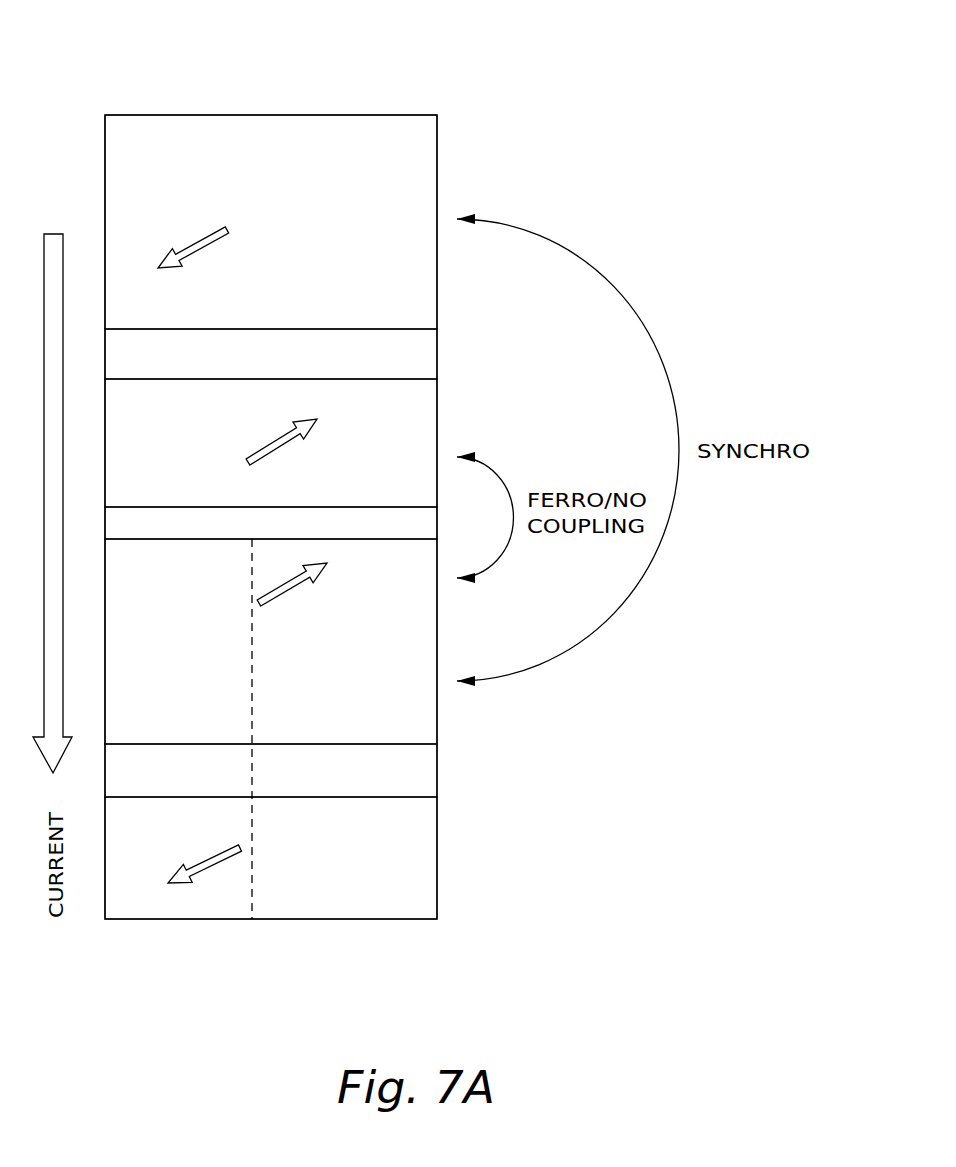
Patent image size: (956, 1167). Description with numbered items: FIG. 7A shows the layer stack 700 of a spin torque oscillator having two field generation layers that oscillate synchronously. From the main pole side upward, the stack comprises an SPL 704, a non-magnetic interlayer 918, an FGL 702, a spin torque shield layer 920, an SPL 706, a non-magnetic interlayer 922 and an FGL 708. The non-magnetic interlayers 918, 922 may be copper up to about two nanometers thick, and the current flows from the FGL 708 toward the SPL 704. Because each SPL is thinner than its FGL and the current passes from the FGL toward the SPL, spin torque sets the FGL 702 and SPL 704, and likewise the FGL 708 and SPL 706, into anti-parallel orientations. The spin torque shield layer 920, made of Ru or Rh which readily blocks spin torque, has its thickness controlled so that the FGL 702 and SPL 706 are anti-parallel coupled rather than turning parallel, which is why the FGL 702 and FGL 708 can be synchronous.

The magnetic memory stack 700 is at (208, 40).
The FGL 708 is at (428, 162).
The non-magnetic interlayer 922 is at (428, 356).
The SPL 706 is at (428, 402).
The spin torque shield layer 920 is at (428, 519).
The FGL 702 is at (428, 726).
The non-magnetic interlayer 918 is at (428, 772).
The SPL 704 is at (428, 840).